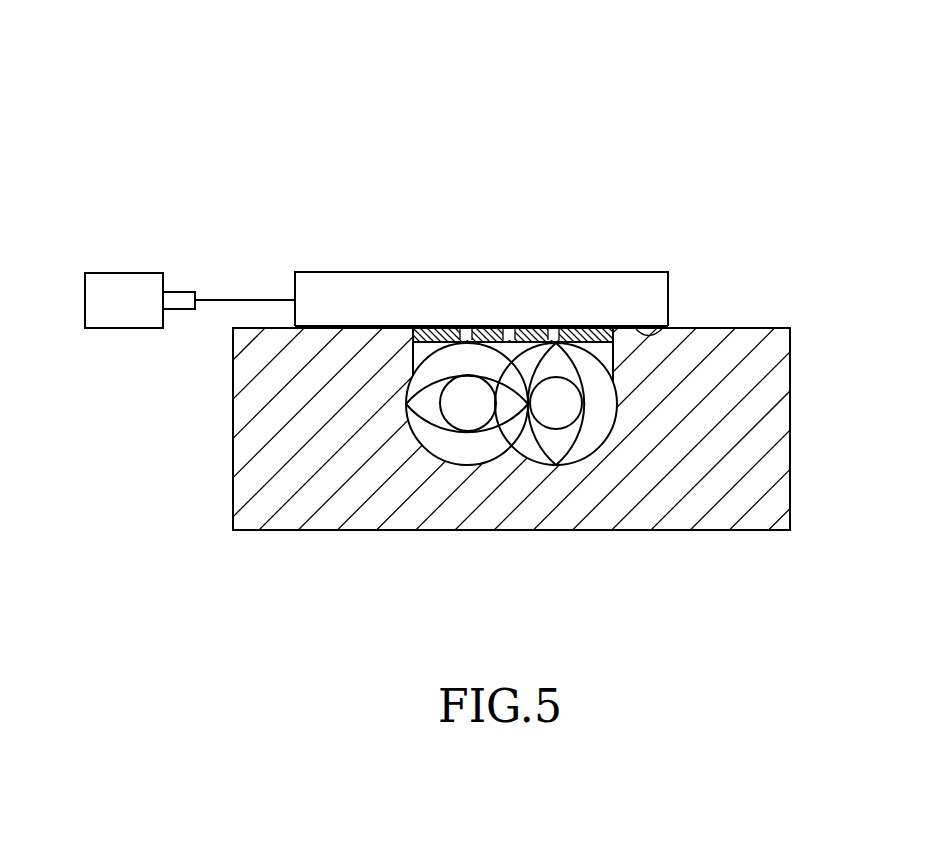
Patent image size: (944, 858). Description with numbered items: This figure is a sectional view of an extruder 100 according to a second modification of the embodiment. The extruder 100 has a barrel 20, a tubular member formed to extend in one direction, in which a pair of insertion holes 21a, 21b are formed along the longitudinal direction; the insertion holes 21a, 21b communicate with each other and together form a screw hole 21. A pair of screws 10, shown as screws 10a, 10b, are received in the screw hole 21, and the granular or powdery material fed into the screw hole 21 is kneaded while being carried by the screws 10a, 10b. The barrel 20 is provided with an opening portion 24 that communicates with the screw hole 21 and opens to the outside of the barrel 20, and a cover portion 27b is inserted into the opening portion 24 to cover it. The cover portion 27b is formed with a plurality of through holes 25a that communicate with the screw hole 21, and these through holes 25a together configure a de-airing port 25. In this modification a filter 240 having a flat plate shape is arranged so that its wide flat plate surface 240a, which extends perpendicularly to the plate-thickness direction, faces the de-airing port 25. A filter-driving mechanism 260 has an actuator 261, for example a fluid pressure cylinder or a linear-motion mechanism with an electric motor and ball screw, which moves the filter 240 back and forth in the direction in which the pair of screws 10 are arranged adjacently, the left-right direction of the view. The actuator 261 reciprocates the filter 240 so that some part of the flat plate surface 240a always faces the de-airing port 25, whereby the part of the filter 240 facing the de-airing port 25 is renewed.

The extruder 100 is at (168, 96).
The pair of screws 10 is at (516, 475).
The screw 10a is at (458, 415).
The screw 10b is at (563, 417).
The barrel 20 is at (258, 433).
The screw hole 21 is at (417, 440).
The insertion hole 21a is at (440, 448).
The insertion hole 21b is at (527, 445).
The opening portion 24 is at (412, 351).
The de-airing port 25 is at (512, 353).
The through holes 25a is at (550, 328).
The cover portion 27b is at (600, 342).
The filter 240 is at (650, 265).
The flat plate surface 240a is at (668, 325).
The filter-driving mechanism 260 is at (96, 228).
The actuator 261 is at (130, 295).